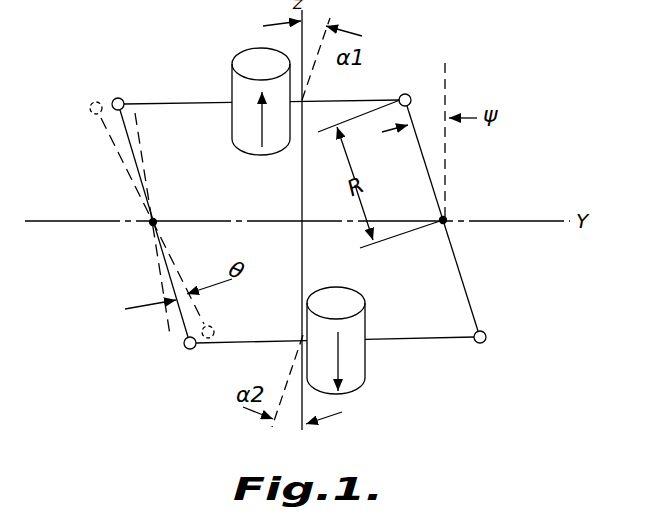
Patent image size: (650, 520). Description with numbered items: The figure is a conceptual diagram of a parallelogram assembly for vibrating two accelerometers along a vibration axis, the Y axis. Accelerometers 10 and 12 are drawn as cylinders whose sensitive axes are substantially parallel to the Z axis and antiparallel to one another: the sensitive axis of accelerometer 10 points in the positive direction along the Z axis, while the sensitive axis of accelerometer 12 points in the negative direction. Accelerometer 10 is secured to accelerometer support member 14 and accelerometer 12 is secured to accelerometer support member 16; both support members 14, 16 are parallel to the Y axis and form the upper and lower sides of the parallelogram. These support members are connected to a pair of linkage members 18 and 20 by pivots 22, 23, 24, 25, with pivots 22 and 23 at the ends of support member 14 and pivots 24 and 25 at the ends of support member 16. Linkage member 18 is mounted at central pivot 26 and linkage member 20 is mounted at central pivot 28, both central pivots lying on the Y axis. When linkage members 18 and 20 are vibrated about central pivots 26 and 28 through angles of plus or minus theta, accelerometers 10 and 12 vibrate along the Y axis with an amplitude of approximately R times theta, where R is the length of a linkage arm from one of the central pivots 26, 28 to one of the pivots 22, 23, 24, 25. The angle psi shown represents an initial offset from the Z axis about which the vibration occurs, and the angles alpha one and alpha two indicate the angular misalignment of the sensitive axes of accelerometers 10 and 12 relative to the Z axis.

The accelerometer 10 is at (256, 49).
The accelerometer 12 is at (355, 392).
The accelerometer support member 14 is at (181, 101).
The accelerometer support member 16 is at (429, 345).
The linkage member 18 is at (134, 160).
The linkage member 20 is at (461, 272).
The pivot 22 is at (115, 97).
The pivot 23 is at (405, 93).
The pivot 24 is at (188, 350).
The pivot 25 is at (487, 337).
The central pivot 26 is at (150, 226).
The central pivot 28 is at (447, 217).